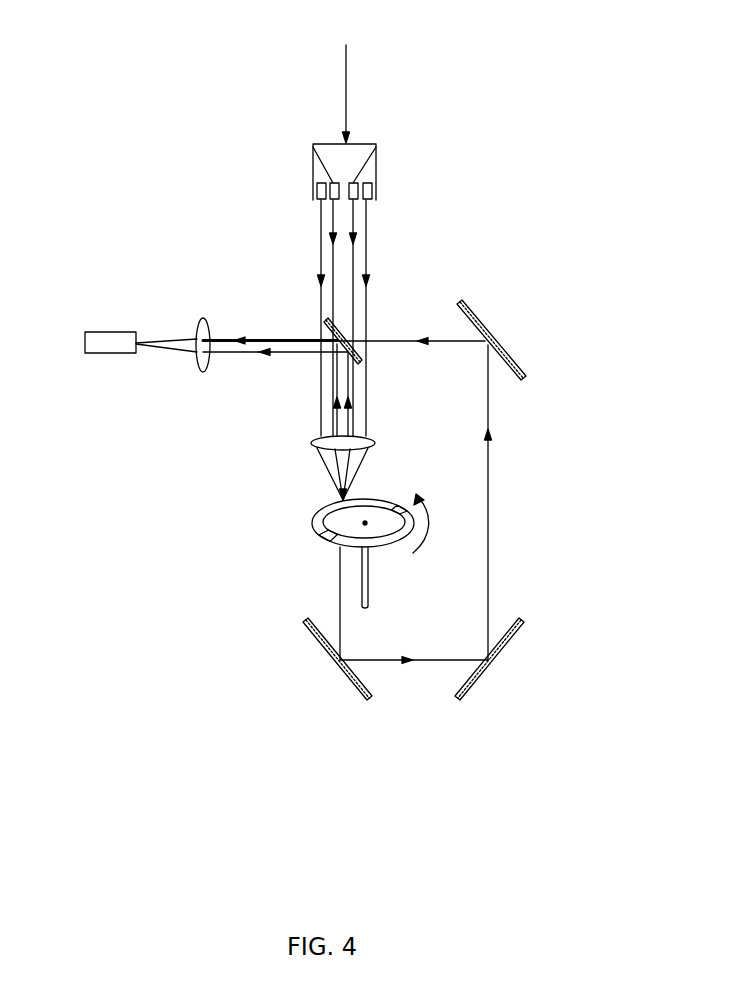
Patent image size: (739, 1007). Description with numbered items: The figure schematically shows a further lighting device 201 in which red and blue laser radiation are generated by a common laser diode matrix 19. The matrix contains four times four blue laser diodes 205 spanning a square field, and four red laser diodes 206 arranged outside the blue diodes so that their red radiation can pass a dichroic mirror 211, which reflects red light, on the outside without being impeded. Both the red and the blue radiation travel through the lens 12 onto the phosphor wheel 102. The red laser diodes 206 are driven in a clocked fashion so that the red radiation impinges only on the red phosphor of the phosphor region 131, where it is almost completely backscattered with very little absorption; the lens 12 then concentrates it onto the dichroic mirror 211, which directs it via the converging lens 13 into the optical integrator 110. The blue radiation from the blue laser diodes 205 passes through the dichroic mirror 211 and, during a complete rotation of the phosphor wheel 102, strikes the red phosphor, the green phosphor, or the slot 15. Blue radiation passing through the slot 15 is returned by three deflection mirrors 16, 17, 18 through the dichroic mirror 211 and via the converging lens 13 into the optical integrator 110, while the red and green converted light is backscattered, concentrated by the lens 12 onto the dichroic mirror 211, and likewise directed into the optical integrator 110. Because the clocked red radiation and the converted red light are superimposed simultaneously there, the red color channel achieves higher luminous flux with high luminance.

The lighting device 201 is at (475, 114).
The laser diode matrix 19 is at (346, 79).
The blue laser diodes 205 is at (313, 147).
The red laser diodes 206 is at (317, 191).
The optical integrator 110 is at (104, 332).
The converging lens 13 is at (203, 318).
The dichroic mirror 211 is at (340, 334).
The deflection mirror 18 is at (482, 322).
The lens 12 is at (310, 442).
The phosphor region 131 is at (315, 517).
The slot 15 is at (402, 507).
The phosphor wheel 102 is at (388, 554).
The deflection mirror 16 is at (318, 638).
The deflection mirror 17 is at (498, 655).